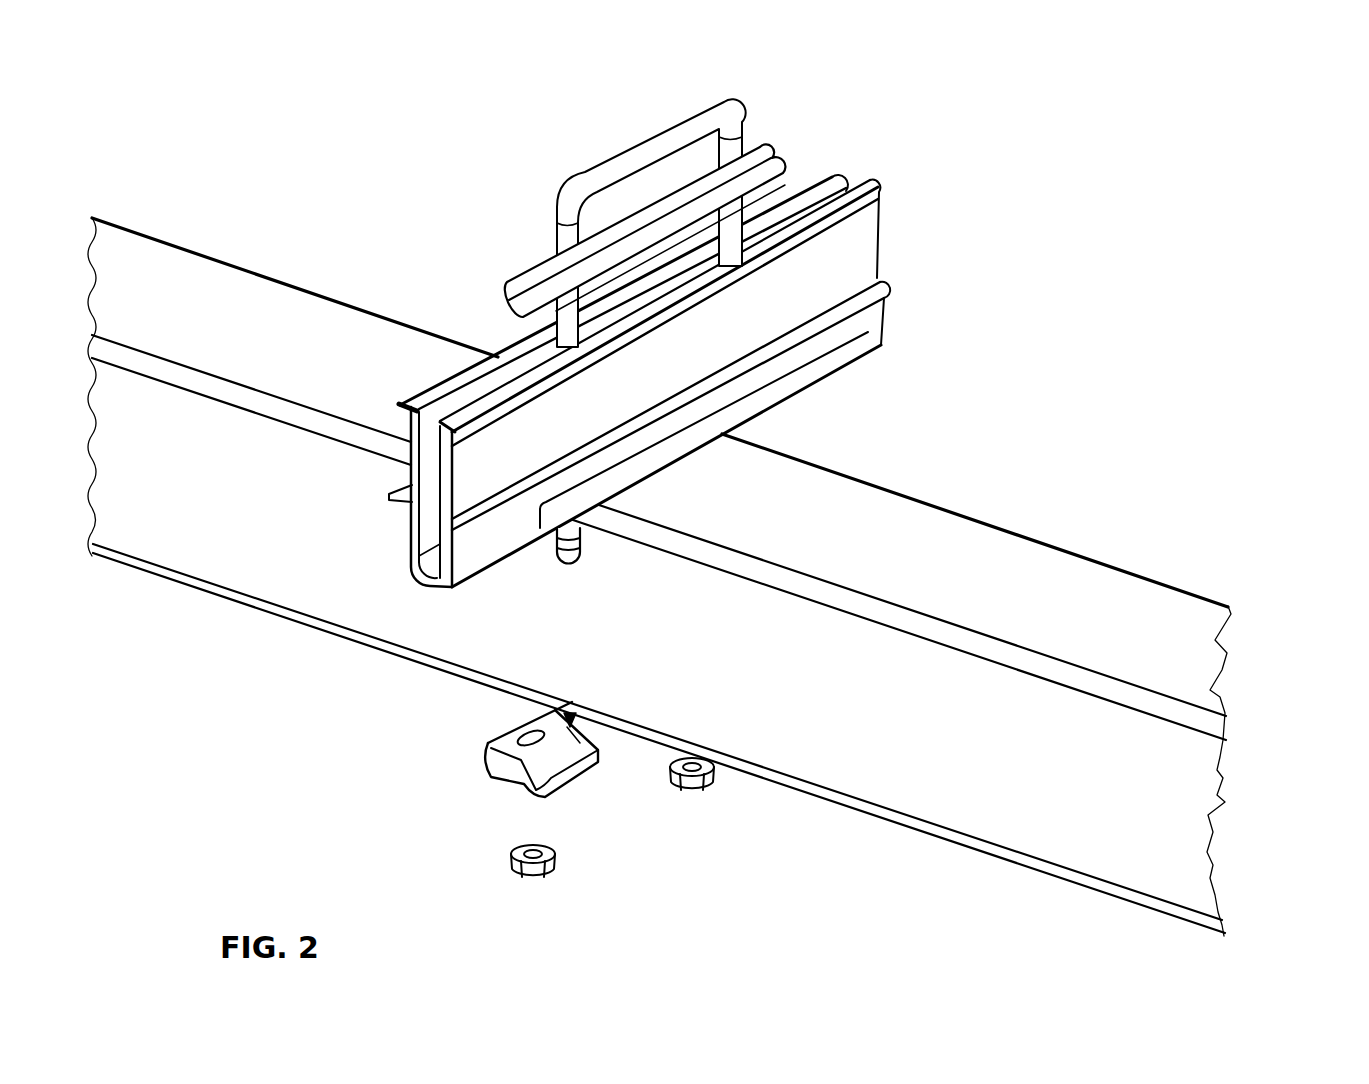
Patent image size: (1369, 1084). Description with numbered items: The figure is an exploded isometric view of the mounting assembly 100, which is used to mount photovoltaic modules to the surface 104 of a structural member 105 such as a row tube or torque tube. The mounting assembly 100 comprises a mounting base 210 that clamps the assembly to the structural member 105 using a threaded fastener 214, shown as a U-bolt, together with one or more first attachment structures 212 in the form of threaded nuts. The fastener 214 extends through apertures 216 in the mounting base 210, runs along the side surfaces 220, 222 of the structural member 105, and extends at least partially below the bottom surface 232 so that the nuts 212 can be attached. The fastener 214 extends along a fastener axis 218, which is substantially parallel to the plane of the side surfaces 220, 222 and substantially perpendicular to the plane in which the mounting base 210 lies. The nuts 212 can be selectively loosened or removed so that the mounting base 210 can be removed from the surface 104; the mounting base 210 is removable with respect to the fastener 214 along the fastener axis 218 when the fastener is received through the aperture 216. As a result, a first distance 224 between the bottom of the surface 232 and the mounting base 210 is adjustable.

The mounting assembly 100 is at (1008, 312).
The surface 104 is at (174, 343).
The structural member 105 is at (1208, 695).
The mounting base 210 is at (484, 760).
The first attachment structure 212 is at (535, 882).
The threaded fastener 214 is at (548, 552).
The aperture 216 is at (517, 739).
The fastener axis 218 is at (567, 625).
The side surface 220 is at (1005, 768).
The side surface 222 is at (1042, 535).
The first distance 224 is at (560, 723).
The bottom surface 232 is at (268, 604).